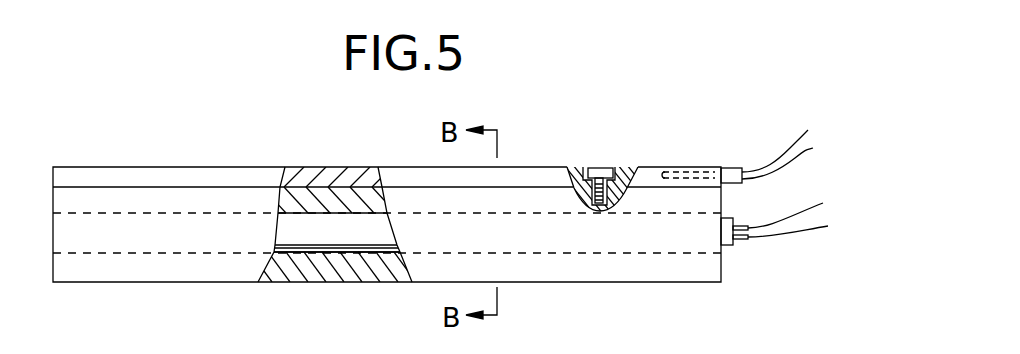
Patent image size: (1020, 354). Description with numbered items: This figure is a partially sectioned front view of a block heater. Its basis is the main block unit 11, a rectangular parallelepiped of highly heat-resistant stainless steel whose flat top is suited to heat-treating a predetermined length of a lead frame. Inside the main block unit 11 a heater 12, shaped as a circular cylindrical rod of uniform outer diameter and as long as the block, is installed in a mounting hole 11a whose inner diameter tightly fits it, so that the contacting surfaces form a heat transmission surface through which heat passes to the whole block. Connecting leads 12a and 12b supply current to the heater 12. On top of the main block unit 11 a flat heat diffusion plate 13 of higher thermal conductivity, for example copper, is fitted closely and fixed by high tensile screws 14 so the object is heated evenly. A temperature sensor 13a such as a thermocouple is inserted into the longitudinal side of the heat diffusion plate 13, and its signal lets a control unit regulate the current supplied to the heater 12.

The main block unit 11 is at (195, 270).
The mounting hole 11a is at (369, 252).
The heater 12 is at (322, 235).
The connecting lead 12a is at (805, 225).
The connecting lead 12b is at (808, 203).
The heat diffusion plate 13 is at (192, 177).
The temperature sensor 13a is at (683, 172).
The screw 14 is at (600, 170).